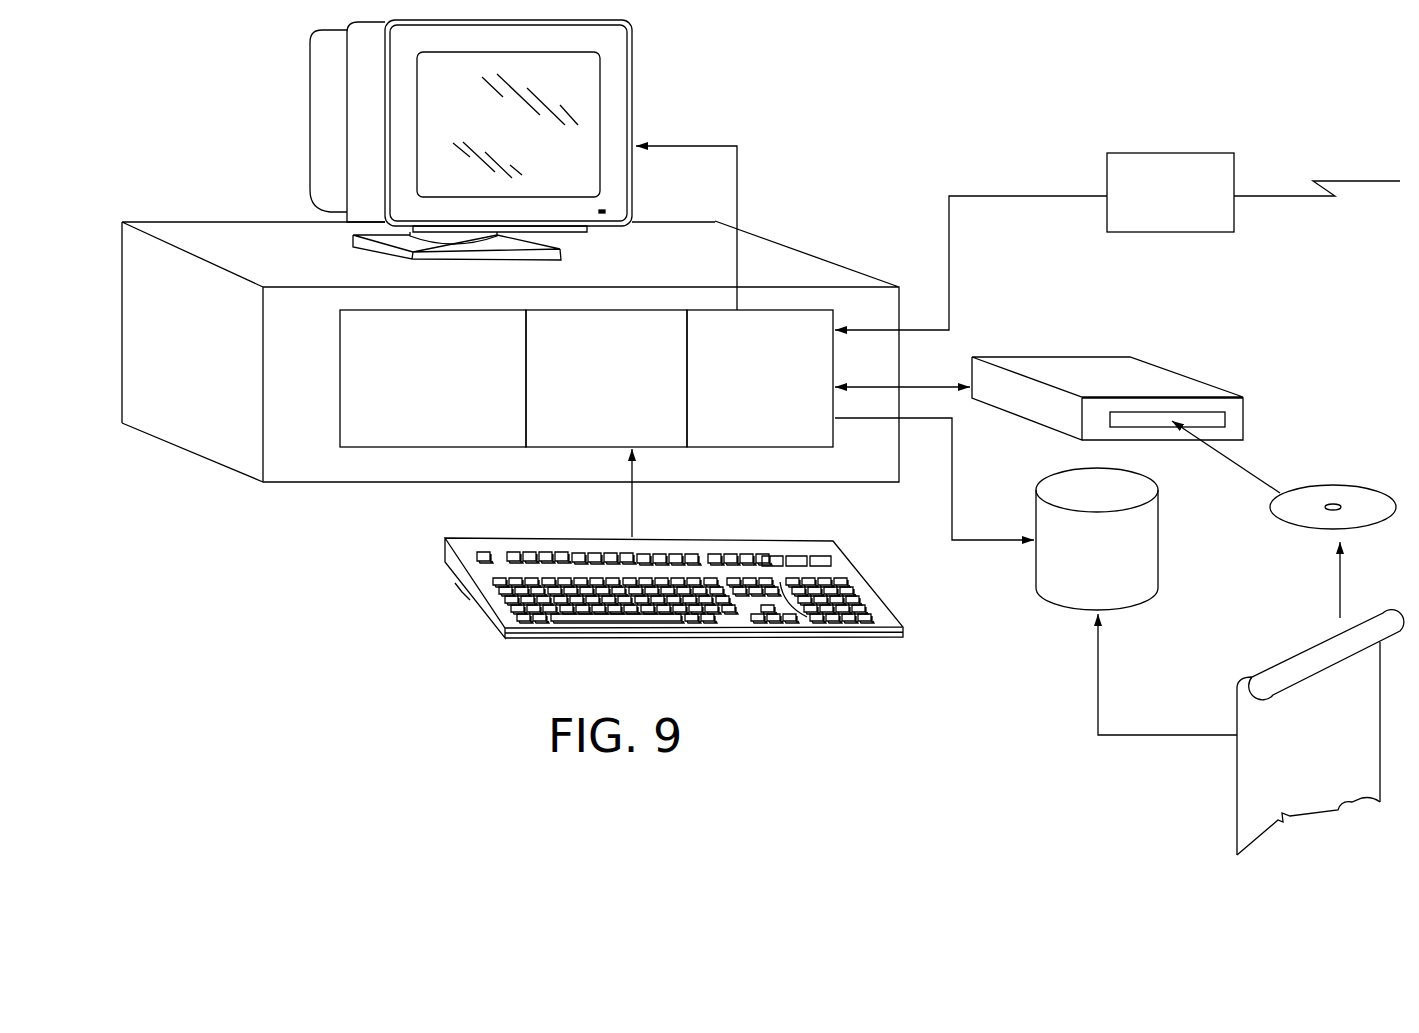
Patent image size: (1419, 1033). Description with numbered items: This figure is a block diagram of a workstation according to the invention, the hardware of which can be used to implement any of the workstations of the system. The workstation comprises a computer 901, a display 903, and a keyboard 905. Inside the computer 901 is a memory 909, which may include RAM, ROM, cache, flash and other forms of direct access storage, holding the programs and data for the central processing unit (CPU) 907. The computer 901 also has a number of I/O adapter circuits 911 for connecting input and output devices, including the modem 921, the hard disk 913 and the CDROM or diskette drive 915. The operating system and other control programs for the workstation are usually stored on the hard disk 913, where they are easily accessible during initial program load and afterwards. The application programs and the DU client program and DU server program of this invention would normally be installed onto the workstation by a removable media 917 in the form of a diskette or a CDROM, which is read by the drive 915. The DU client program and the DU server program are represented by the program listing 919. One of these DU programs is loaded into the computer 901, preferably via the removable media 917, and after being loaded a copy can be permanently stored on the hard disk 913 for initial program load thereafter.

The computer 901 is at (798, 248).
The display 903 is at (310, 102).
The keyboard 905 is at (465, 597).
The central processing unit (CPU) 907 is at (582, 439).
The memory 909 is at (383, 443).
The I/O adapter circuits 911 is at (802, 438).
The hard disk 913 is at (1058, 605).
The CDROM or diskette drive 915 is at (1173, 372).
The removable media 917 is at (1365, 485).
The program listing 919 is at (1300, 655).
The modem 921 is at (1177, 153).